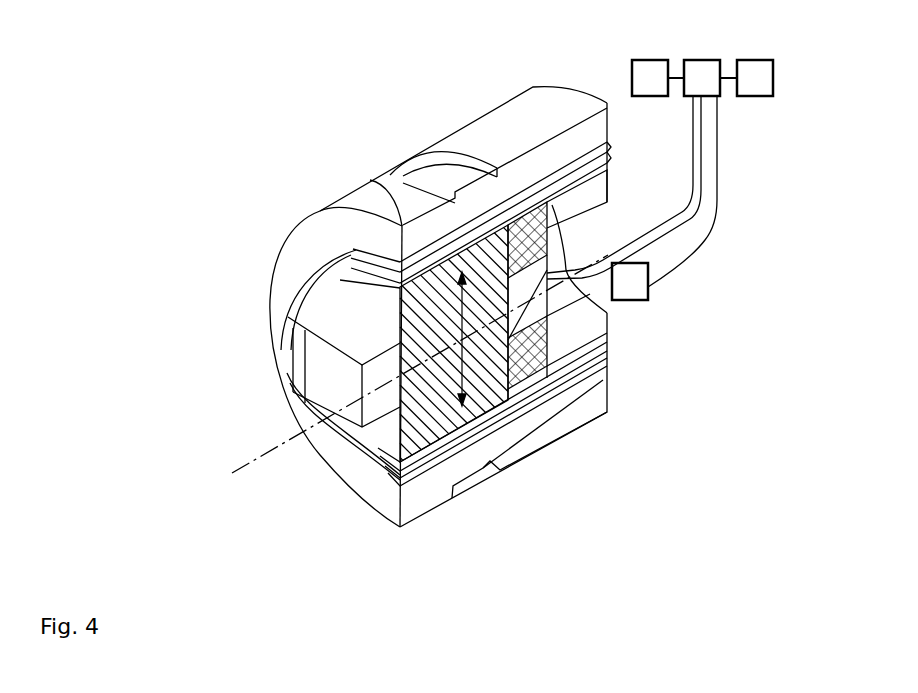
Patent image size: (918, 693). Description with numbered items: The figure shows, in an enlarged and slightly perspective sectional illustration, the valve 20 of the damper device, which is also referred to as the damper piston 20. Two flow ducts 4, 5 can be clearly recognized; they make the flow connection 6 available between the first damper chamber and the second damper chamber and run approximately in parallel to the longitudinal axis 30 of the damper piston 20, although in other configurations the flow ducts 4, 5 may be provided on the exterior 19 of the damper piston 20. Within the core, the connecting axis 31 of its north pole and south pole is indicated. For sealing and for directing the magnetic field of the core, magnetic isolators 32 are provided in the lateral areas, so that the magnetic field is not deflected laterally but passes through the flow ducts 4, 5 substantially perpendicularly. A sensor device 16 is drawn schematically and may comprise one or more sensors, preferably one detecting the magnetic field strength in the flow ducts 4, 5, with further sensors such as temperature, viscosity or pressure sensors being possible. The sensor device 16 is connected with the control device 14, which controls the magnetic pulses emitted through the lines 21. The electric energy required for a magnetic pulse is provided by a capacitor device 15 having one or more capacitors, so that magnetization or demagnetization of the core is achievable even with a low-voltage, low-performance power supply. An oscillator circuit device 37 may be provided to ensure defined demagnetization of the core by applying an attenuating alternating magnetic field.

The flow duct 4 is at (615, 165).
The flow duct 5 is at (613, 363).
The flow connection 6 is at (613, 382).
The control device 14 is at (703, 66).
The capacitor device 15 is at (757, 68).
The sensor device 16 is at (638, 296).
The exterior 19 is at (348, 182).
The valve 20 is at (277, 182).
The lines 21 is at (675, 223).
The longitudinal axis 30 is at (247, 456).
The connecting axis 31 is at (453, 299).
The magnetic isolators 32 is at (530, 232).
The oscillator circuit device 37 is at (642, 66).